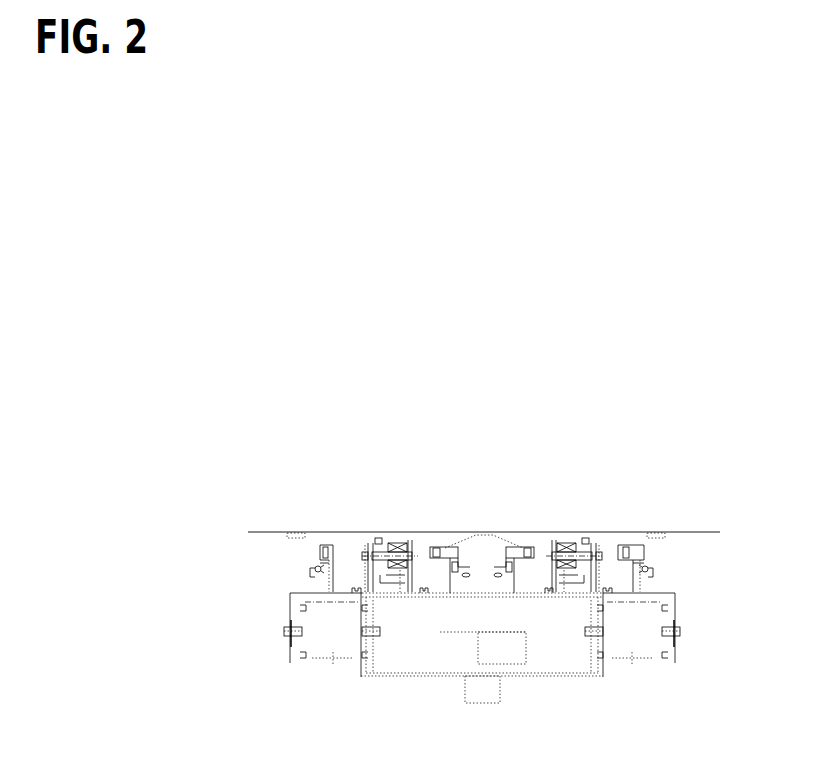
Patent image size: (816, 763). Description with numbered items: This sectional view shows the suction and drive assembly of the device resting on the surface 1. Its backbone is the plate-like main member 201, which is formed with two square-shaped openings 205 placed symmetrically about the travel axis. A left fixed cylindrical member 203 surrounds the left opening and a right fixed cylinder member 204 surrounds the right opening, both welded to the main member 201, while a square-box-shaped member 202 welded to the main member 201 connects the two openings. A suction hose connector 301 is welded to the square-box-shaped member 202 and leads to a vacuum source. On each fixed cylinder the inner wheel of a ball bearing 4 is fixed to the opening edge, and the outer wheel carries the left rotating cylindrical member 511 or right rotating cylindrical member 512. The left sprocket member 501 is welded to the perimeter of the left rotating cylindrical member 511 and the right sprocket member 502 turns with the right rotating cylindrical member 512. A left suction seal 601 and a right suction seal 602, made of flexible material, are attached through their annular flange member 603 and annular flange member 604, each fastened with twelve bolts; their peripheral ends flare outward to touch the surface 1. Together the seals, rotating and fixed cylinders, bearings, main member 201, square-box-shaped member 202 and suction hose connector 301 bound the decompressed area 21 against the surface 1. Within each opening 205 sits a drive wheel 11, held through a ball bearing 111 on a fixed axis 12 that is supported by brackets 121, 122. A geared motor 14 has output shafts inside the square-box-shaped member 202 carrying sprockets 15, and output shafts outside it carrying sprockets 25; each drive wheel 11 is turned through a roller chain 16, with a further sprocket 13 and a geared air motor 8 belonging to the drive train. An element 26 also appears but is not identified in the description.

The surface 1 is at (268, 531).
The ball bearing 4 is at (313, 568).
The geared air motor 8 is at (503, 650).
The drive wheel 11 is at (396, 538).
The fixed axis 12 is at (380, 540).
The sprocket 13 is at (372, 545).
The geared motor 14 is at (333, 652).
The sprocket 15 is at (373, 640).
The roller chain 16 is at (392, 597).
The decompressed area 21 is at (362, 540).
The sprocket 25 is at (292, 645).
The side frame 26 is at (290, 607).
The ball bearing 111 is at (403, 540).
The bracket 121 is at (368, 577).
The bracket 122 is at (633, 548).
The main member 201 is at (483, 593).
The square-box-shaped member 202 is at (440, 677).
The left fixed cylindrical member 203 is at (323, 586).
The right fixed cylinder member 204 is at (642, 586).
The square-shaped opening 205 is at (373, 605).
The suction hose connector 301 is at (483, 705).
The left sprocket member 501 is at (308, 574).
The right sprocket member 502 is at (657, 575).
The left rotating cylindrical member 511 is at (318, 558).
The right rotating cylindrical member 512 is at (644, 558).
The left suction seal 601 is at (320, 546).
The right suction seal 602 is at (640, 538).
The annular flange member 603 is at (319, 556).
The annular flange member 604 is at (638, 543).